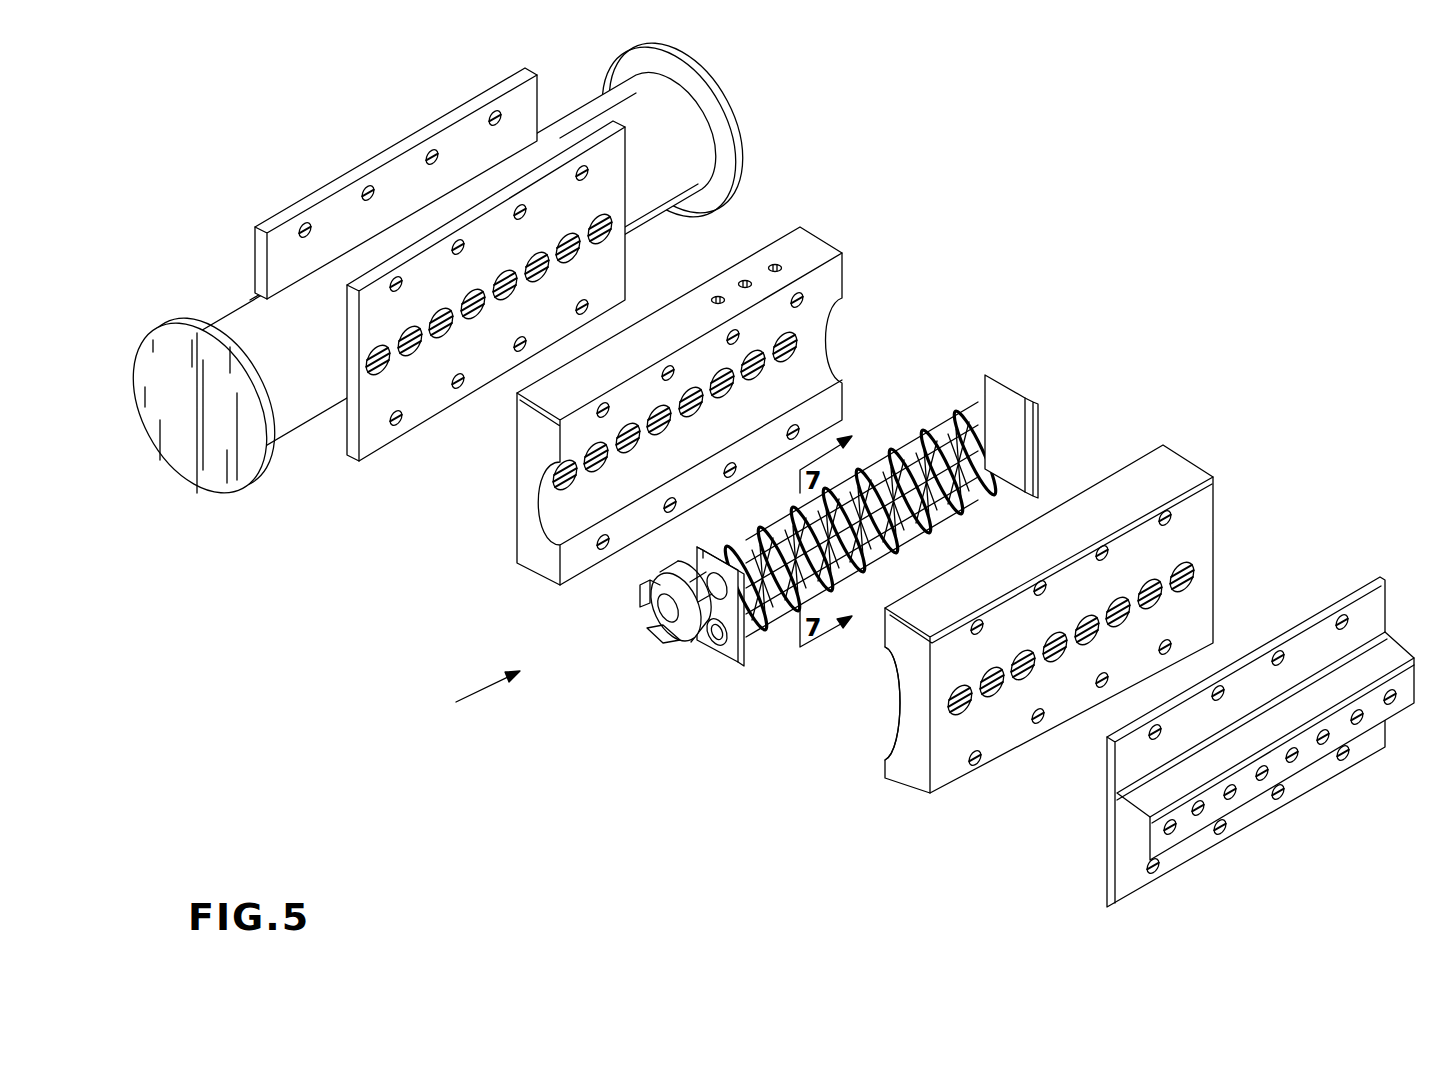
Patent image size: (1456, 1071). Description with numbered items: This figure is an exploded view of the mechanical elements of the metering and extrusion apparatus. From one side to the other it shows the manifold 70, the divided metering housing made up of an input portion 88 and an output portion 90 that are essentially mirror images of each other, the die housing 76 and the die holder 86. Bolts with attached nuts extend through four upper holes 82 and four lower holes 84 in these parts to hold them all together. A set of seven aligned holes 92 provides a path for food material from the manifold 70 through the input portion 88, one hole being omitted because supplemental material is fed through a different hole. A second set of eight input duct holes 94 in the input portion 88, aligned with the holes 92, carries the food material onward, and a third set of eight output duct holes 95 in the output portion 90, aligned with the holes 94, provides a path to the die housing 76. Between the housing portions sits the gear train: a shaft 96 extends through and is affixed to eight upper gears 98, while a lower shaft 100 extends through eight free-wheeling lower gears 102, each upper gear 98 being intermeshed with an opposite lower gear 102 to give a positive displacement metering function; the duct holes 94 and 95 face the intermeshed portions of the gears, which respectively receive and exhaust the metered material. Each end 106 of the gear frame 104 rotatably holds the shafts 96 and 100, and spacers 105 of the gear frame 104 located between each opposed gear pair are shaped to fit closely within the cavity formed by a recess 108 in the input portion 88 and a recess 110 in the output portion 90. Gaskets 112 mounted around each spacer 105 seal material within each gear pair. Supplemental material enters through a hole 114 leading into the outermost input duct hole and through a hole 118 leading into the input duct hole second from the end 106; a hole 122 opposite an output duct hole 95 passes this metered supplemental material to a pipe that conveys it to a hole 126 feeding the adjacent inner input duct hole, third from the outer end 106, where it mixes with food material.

The manifold 70 is at (210, 478).
The die housing 76 is at (466, 695).
The upper holes 82 is at (434, 153).
The lower holes 84 is at (398, 422).
The die holder 86 is at (1368, 605).
The input portion 88 is at (624, 240).
The output portion 90 is at (1205, 508).
The holes 92 is at (578, 255).
The input duct holes 94 is at (597, 468).
The output duct holes 95 is at (1187, 582).
The shaft 96 is at (710, 592).
The upper gears 98 is at (760, 556).
The lower shaft 100 is at (720, 640).
The lower gears 102 is at (758, 620).
The gear frame 104 is at (1033, 452).
The spacers 105 is at (918, 440).
The ends 106 is at (704, 554).
The recess 108 is at (546, 505).
The recess 110 is at (886, 705).
The gaskets 112 is at (960, 420).
The hole 114 is at (777, 264).
The hole 118 is at (746, 280).
The hole 122 is at (1359, 713).
The hole 126 is at (718, 296).